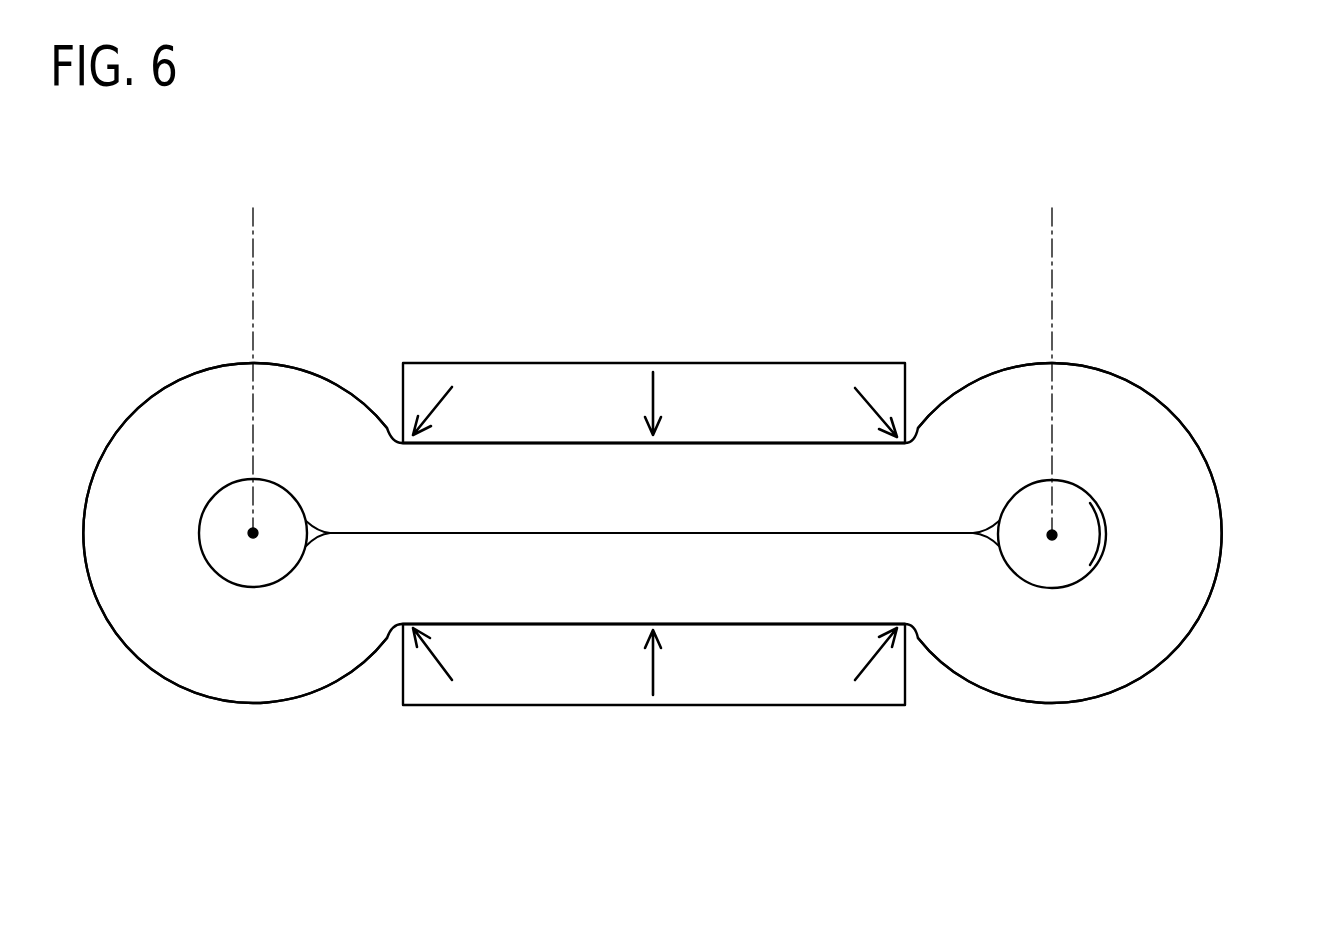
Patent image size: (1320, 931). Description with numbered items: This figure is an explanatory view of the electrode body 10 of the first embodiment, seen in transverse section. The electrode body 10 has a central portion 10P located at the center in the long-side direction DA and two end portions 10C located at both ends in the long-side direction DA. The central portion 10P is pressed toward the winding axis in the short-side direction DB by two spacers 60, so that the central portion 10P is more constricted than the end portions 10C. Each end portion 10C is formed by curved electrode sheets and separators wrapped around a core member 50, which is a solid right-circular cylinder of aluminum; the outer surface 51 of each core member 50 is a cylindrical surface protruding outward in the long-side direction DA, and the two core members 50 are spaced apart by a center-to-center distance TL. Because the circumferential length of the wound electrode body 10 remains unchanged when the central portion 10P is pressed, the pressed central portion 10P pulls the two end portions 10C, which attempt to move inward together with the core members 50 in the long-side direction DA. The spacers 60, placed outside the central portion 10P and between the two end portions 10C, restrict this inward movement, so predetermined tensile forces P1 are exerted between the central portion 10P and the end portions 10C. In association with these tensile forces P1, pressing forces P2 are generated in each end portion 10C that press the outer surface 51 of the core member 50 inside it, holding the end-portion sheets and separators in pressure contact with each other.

The electrode body 10 is at (195, 368).
The end portion 10C is at (173, 667).
The central portion 10P is at (550, 482).
The core member 50 is at (1054, 580).
The outer surface 51 is at (1103, 557).
The spacer 60 is at (870, 696).
The center-to-center distance TL is at (1052, 230).
The long-side direction DA is at (715, 801).
The short-side direction DB is at (1270, 462).
The tensile force P1 is at (452, 480).
The pressing force P2 is at (172, 617).